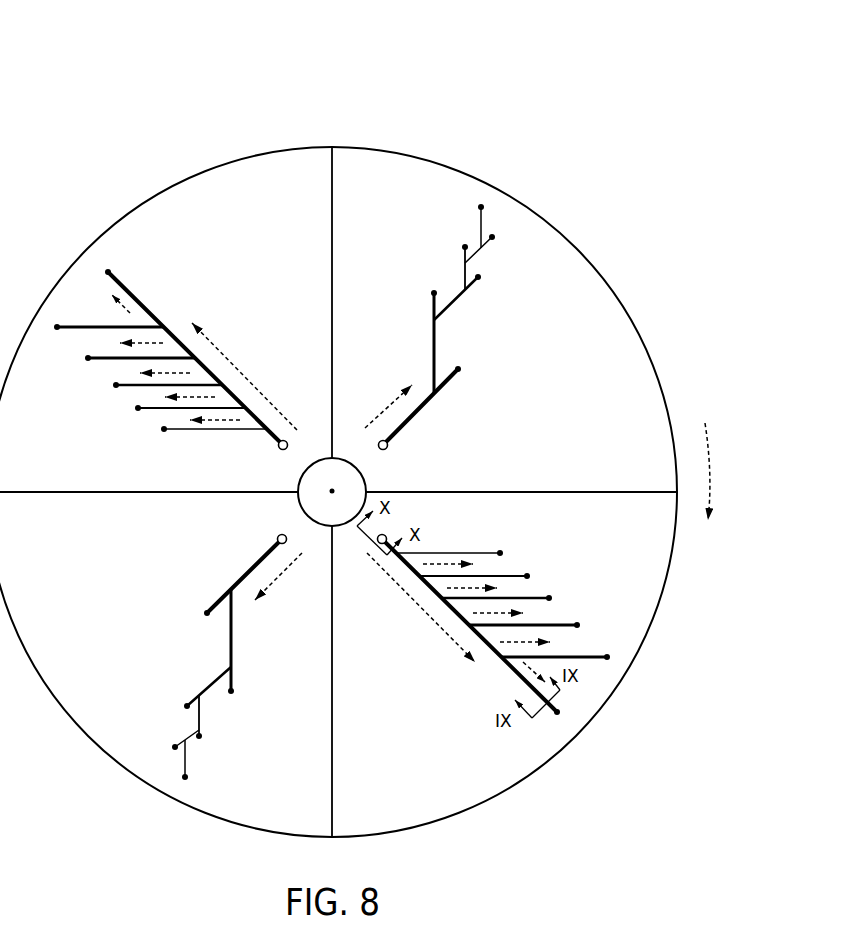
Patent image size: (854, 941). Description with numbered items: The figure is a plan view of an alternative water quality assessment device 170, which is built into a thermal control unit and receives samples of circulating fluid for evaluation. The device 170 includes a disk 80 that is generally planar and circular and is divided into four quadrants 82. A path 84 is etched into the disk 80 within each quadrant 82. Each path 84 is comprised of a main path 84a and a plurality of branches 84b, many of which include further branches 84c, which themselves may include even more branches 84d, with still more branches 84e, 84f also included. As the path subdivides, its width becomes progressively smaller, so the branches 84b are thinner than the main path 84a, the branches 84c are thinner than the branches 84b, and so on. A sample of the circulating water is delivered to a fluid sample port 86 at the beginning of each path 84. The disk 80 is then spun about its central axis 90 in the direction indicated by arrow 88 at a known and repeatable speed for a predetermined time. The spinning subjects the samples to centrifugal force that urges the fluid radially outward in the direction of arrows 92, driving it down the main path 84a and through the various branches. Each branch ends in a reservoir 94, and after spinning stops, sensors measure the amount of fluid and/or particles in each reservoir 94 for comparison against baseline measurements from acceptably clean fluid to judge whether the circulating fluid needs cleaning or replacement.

The water quality assessment device 170 is at (447, 80).
The disk 80 is at (602, 344).
The quadrants 82 is at (243, 175).
The paths 84 is at (150, 310).
The main path 84a is at (270, 436).
The branches 84b is at (72, 332).
The further branches 84c is at (100, 362).
The branches 84d is at (118, 388).
The branches 84e is at (158, 410).
The branches 84f is at (205, 432).
The fluid sample port 86 is at (288, 443).
The arrow 88 is at (710, 460).
The central axis 90 is at (332, 491).
The arrows 92 is at (218, 348).
The reservoir 94 is at (110, 270).